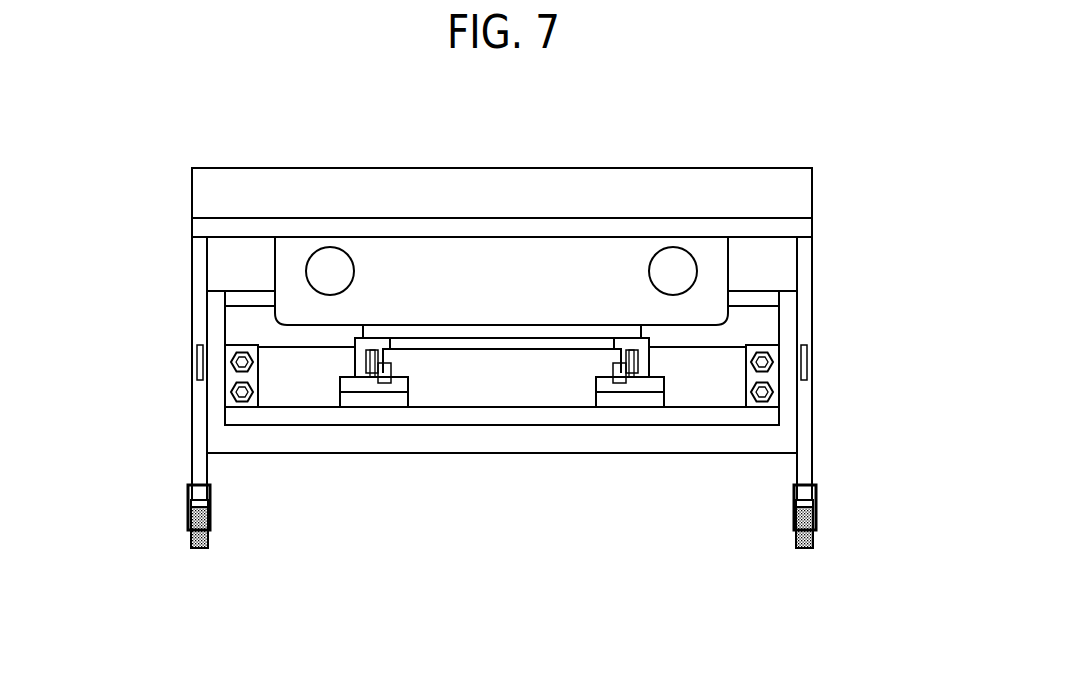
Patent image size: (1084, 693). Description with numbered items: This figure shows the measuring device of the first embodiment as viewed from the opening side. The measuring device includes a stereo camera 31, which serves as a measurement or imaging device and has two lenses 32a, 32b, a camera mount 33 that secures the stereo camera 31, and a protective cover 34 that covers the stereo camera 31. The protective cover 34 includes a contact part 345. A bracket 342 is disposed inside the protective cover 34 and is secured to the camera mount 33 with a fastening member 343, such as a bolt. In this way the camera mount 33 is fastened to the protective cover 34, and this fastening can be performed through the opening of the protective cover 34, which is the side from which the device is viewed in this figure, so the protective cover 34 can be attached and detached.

The stereo camera 31 is at (508, 262).
The lens 32a is at (328, 265).
The lens 32b is at (672, 265).
The camera mount 33 is at (493, 378).
The protective cover 34 is at (785, 185).
The bracket 342 is at (253, 375).
The fastening member 343 is at (233, 398).
The contact part 345 is at (188, 522).